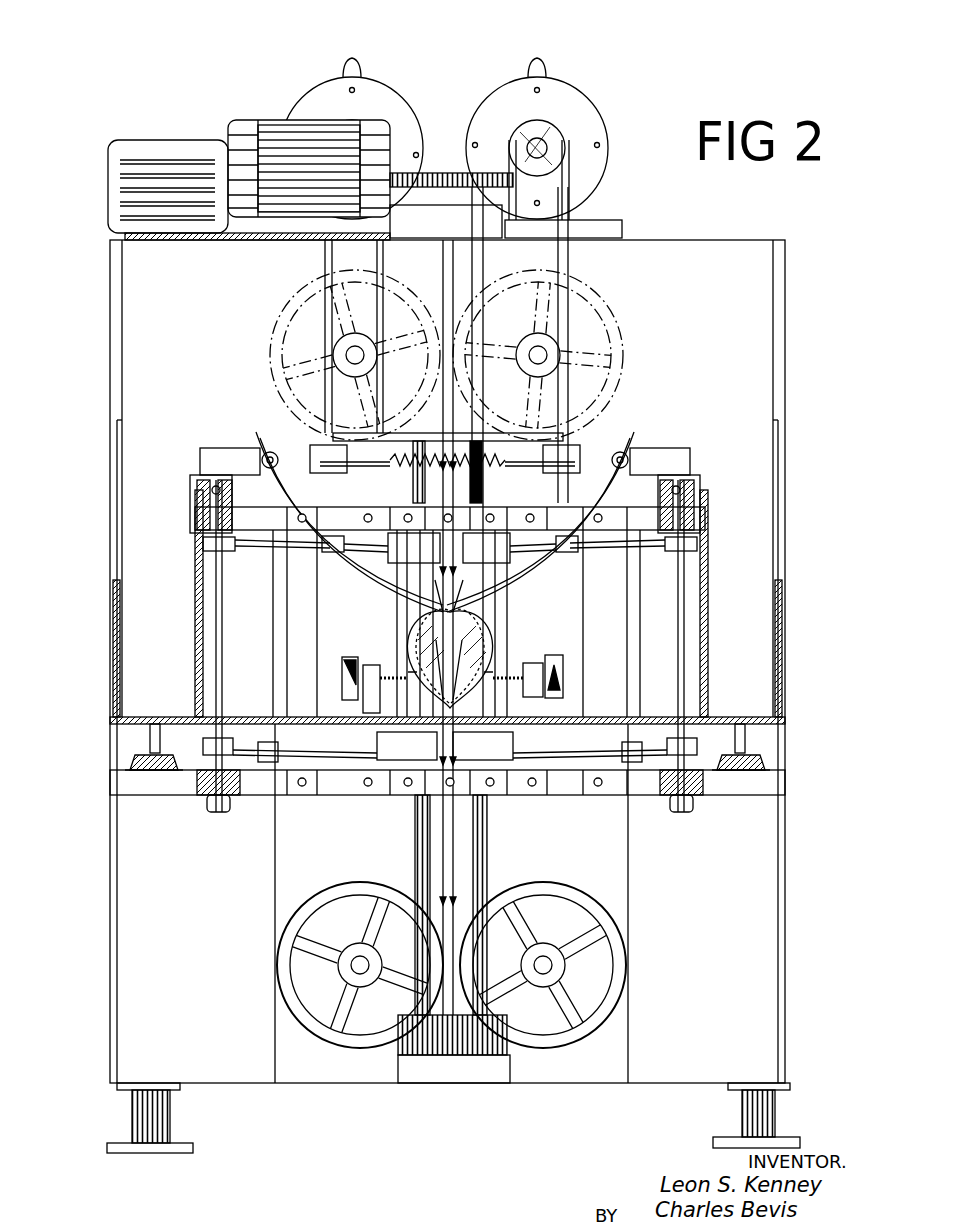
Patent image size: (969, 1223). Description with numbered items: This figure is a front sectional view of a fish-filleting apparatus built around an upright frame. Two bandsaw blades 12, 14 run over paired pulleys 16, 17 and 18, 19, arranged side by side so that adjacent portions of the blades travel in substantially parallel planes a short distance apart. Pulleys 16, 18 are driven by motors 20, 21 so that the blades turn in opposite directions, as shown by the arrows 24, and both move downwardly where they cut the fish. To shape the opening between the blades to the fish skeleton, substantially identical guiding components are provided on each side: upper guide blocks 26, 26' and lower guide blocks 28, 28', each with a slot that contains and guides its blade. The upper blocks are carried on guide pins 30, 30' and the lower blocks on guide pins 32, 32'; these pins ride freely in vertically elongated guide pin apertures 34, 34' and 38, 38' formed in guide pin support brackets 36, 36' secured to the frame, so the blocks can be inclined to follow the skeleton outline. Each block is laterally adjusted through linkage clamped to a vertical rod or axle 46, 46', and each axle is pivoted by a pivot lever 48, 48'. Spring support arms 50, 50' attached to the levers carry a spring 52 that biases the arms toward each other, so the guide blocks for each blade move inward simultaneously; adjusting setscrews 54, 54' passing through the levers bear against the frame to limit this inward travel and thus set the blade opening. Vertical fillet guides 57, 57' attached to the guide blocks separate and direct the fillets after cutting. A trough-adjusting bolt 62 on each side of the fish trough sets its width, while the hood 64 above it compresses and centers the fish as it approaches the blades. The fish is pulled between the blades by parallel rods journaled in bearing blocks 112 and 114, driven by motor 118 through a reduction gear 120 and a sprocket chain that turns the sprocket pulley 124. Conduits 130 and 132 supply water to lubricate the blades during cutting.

The bandsaw blade 12 is at (628, 905).
The bandsaw blade 14 is at (275, 905).
The pulley 16 is at (323, 325).
The pulley 17 is at (285, 975).
The pulley 18 is at (615, 350).
The pulley 19 is at (535, 1040).
The motor 20 is at (392, 102).
The motor 21 is at (578, 112).
The arrows 24 is at (492, 1023).
The upper guide block 26 is at (389, 568).
The upper guide block 26' is at (522, 560).
The lower guide block 28 is at (358, 782).
The lower guide block 28' is at (517, 778).
The guide pin 30 is at (335, 578).
The guide pin 30' is at (589, 563).
The lower guide pin 32 is at (282, 791).
The lower guide pin 32' is at (596, 788).
The guide pin aperture 34 is at (242, 534).
The guide pin aperture 34' is at (656, 544).
The guide pin support bracket 36 is at (224, 646).
The guide pin support bracket 36' is at (642, 646).
The guide pin aperture 38 is at (194, 780).
The guide pin aperture 38' is at (712, 780).
The vertical rod or axle 46 is at (134, 478).
The vertical rod or axle 46' is at (771, 480).
The pivot lever 48 is at (200, 452).
The pivot lever 48' is at (691, 459).
The spring support arm 50 is at (359, 421).
The spring support arm 50' is at (614, 433).
The spring 52 is at (480, 452).
The adjusting setscrew 54 is at (246, 433).
The adjusting setscrew 54' is at (679, 443).
The fillet guide 57 is at (113, 768).
The fillet guide 57' is at (792, 768).
The trough-adjusting bolt 62 is at (565, 676).
The hood 64 is at (500, 630).
The bearing block 112 is at (410, 232).
The bearing block 114 is at (412, 1065).
The motor 118 is at (310, 163).
The reduction gear 120 is at (140, 150).
The sprocket pulley 124 is at (455, 174).
The conduit 130 is at (695, 490).
The conduit 132 is at (205, 488).